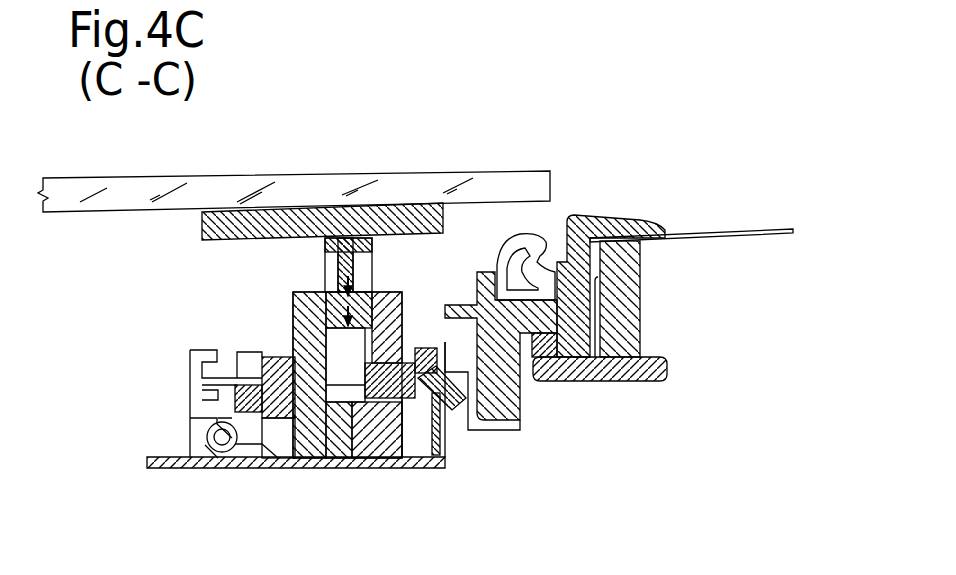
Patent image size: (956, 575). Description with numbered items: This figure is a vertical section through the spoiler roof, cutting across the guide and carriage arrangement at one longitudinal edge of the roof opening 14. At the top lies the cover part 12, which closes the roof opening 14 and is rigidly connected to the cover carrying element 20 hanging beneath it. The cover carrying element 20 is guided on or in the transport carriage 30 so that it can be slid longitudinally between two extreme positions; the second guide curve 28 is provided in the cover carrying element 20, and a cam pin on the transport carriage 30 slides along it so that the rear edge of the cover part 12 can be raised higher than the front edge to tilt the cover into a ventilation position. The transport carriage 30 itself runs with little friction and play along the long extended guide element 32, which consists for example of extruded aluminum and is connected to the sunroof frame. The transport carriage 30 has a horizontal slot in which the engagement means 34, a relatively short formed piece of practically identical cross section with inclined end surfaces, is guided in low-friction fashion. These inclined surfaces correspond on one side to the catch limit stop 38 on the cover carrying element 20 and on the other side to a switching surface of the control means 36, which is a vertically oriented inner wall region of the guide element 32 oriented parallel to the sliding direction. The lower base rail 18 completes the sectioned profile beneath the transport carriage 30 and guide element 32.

The cover part 12 is at (85, 198).
The roof opening 14 is at (484, 237).
The base rail 18 is at (445, 450).
The cover carrying element 20 is at (352, 265).
The second guide curve 28 is at (360, 275).
The transport carriage 30 is at (337, 443).
The guide element 32 is at (270, 452).
The engagement means 34 is at (407, 395).
The control means 36 is at (427, 357).
The catch limit stop 38 is at (363, 353).